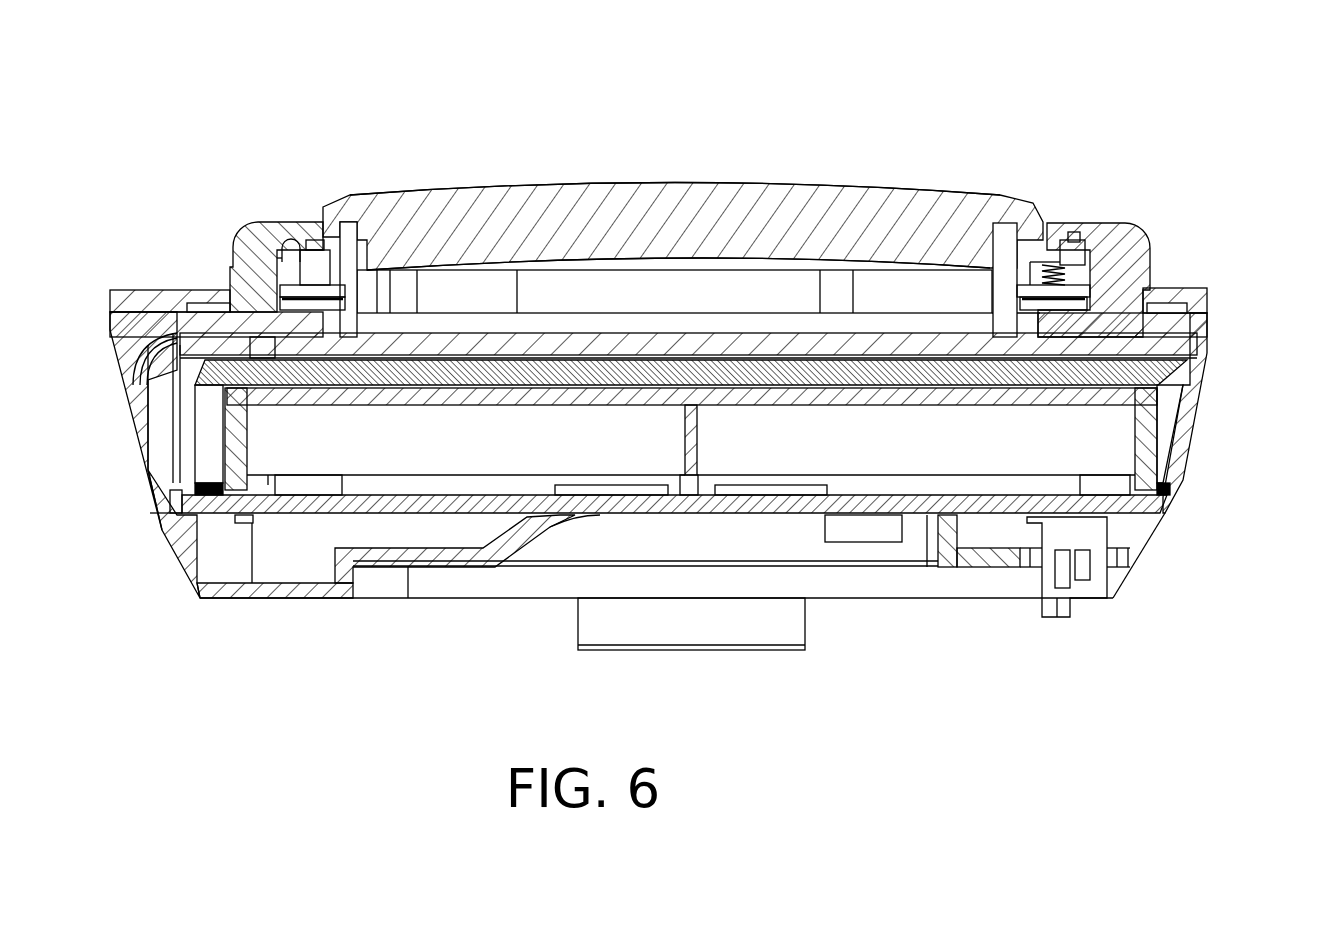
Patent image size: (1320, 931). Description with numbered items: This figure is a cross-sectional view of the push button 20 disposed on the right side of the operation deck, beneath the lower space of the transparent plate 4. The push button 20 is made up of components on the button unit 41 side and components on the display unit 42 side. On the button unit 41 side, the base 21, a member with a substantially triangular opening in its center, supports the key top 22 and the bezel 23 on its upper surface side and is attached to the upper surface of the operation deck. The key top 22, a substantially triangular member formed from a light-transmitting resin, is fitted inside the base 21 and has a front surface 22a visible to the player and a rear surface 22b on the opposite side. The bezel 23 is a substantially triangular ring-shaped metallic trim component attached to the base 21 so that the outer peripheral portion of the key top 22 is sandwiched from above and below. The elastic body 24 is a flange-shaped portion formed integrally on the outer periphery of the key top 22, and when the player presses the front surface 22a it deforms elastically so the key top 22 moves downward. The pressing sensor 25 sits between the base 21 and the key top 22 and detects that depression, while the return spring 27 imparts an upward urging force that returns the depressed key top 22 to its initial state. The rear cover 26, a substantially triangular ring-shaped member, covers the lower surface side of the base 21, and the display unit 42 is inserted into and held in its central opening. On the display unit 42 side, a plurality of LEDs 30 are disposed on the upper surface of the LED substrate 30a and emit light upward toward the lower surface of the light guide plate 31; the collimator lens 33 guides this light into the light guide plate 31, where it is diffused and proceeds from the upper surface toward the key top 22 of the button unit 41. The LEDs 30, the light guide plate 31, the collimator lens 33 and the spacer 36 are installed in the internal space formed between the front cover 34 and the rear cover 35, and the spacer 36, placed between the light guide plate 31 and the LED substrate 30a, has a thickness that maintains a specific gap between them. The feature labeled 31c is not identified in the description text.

The transparent plate 4 is at (162, 290).
The push button 20 is at (683, 196).
The base 21 is at (1137, 280).
The key top 22 is at (545, 185).
The front surface 22a is at (658, 185).
The rear surface 22b is at (670, 258).
The bezel 23 is at (262, 237).
The elastic body 24 is at (1050, 262).
The pressing sensor 25 is at (303, 262).
The rear cover 26 is at (262, 347).
The return spring 27 is at (1037, 235).
The LED 30 is at (190, 488).
The LED substrate 30a is at (505, 515).
The light guide plate 31 is at (195, 340).
The sheet 31c is at (205, 362).
The collimator lens 33 is at (208, 455).
The front cover 34 is at (188, 392).
The rear cover 35 is at (220, 598).
The spacer 36 is at (372, 440).
The button unit 41 is at (683, 196).
The display unit 42 is at (868, 572).